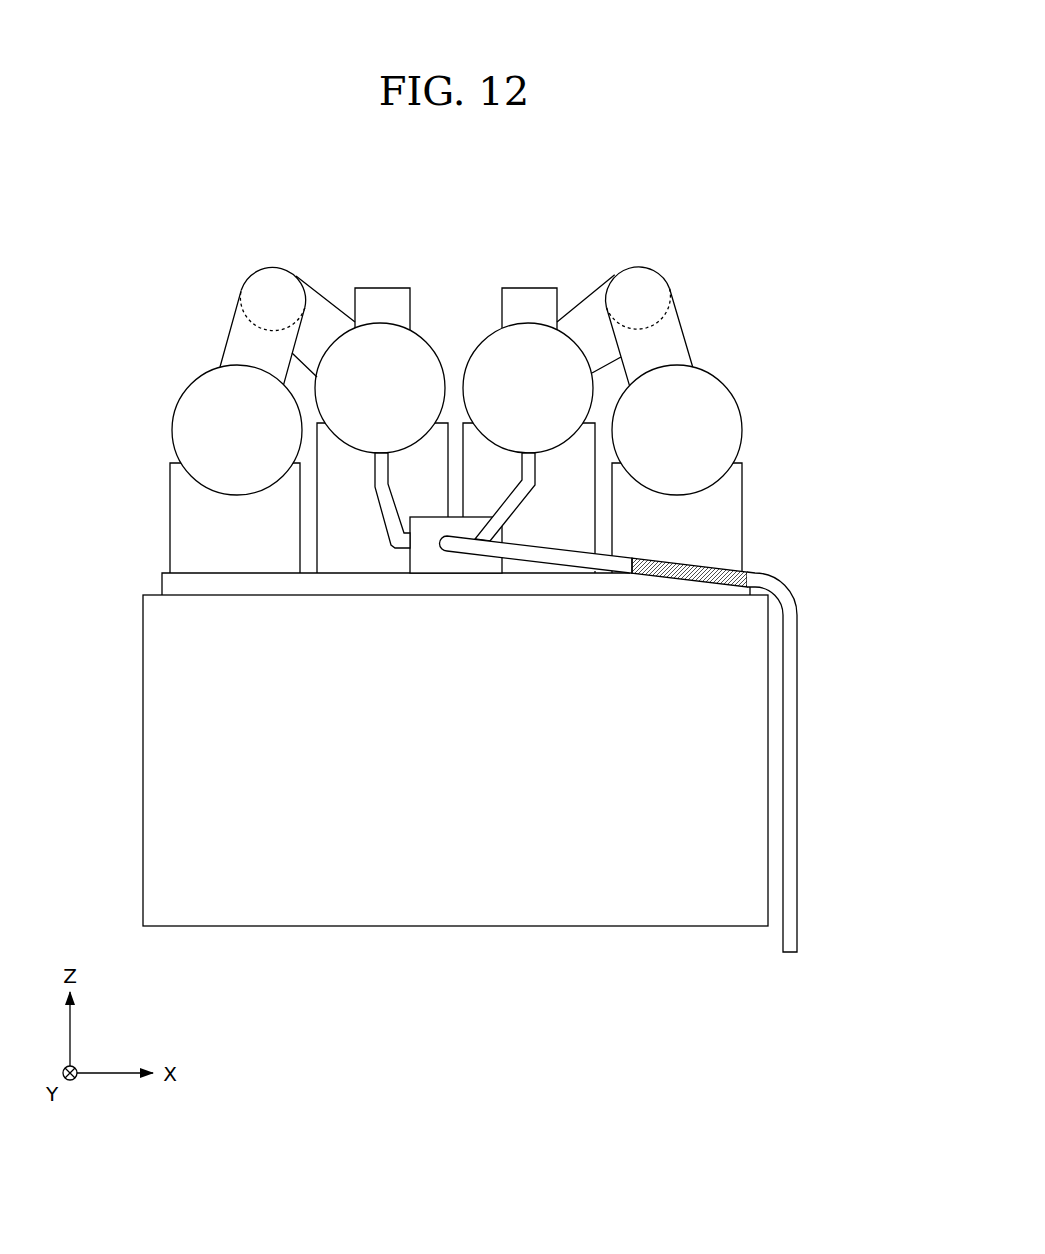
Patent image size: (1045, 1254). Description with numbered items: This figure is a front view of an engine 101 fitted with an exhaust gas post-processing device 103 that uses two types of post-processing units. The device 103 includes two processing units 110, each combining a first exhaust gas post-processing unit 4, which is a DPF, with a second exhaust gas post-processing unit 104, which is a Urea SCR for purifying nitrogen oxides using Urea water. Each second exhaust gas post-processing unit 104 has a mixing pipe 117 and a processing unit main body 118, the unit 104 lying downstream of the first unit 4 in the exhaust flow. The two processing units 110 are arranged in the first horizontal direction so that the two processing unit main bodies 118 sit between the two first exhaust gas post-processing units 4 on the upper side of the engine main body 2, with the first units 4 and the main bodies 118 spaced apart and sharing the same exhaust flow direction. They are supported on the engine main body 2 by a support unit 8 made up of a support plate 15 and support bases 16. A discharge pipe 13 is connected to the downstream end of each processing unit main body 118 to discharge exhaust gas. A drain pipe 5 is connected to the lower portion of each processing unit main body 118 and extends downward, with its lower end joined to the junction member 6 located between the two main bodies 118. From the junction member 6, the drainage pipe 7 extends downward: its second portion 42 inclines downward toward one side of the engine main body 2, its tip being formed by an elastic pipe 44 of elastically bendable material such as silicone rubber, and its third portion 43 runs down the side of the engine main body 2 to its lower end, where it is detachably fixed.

The engine main body 2 is at (325, 908).
The first exhaust gas post-processing unit 4 is at (172, 430).
The drain pipe 5 is at (385, 525).
The junction member 6 is at (433, 517).
The drainage pipe 7 is at (788, 588).
The support unit 8 is at (160, 573).
The discharge pipe 13 is at (365, 302).
The support plate 15 is at (266, 582).
The support base 16 is at (330, 533).
The second portion 42 is at (560, 565).
The third portion 43 is at (797, 690).
The elastic pipe 44 is at (685, 577).
The engine 101 is at (740, 215).
The exhaust gas post-processing device 103 is at (175, 247).
The second exhaust gas post-processing unit 104 is at (313, 285).
The processing unit 110 is at (217, 357).
The mixing pipe 117 is at (272, 265).
The processing unit main body 118 is at (427, 328).